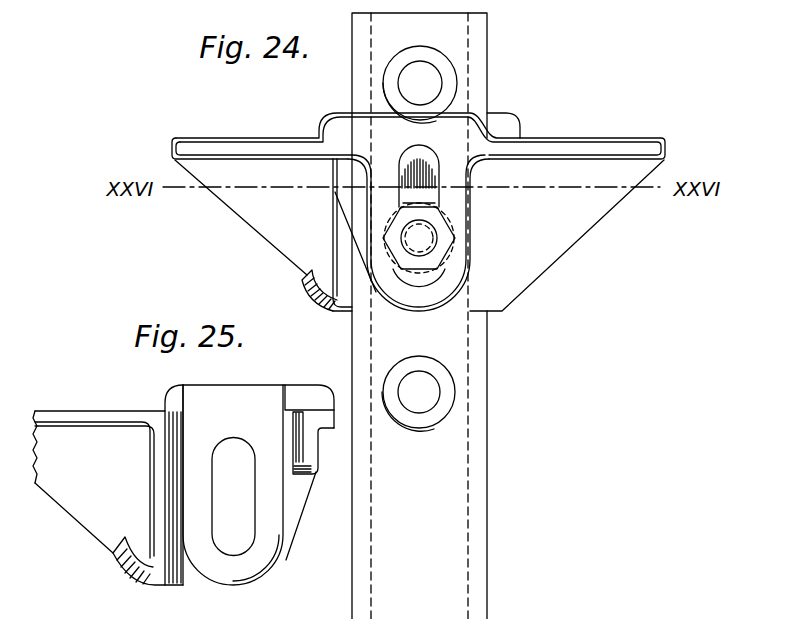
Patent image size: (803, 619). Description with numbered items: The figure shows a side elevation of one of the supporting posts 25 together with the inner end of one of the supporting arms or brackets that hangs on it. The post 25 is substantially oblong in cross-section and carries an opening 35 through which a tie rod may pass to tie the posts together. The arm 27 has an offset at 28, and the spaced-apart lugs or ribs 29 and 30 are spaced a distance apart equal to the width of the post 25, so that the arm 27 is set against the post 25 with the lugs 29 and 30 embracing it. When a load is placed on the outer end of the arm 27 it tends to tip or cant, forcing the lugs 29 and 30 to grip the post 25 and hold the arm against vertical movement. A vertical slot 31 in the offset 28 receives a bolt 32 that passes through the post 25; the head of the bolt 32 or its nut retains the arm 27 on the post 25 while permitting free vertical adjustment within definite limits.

In FIG. 24, the post 25 is at (453, 440).
In FIG. 24, the arm 27 is at (210, 148).
In FIG. 25, the arm 27 is at (76, 416).
In FIG. 25, the offset 28 is at (258, 485).
In FIG. 24, the lug 29 is at (342, 236).
In FIG. 25, the lug 29 is at (158, 466).
In FIG. 25, the lug 30 is at (318, 473).
In FIG. 24, the vertical slot 31 is at (424, 170).
In FIG. 25, the vertical slot 31 is at (245, 525).
In FIG. 24, the bolt 32 is at (432, 241).
In FIG. 24, the opening 35 is at (432, 390).